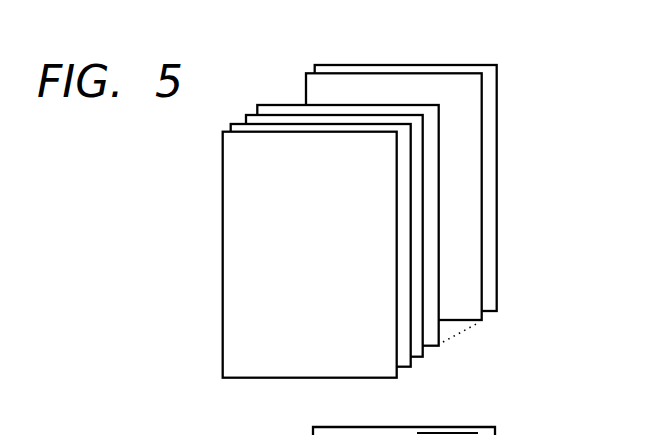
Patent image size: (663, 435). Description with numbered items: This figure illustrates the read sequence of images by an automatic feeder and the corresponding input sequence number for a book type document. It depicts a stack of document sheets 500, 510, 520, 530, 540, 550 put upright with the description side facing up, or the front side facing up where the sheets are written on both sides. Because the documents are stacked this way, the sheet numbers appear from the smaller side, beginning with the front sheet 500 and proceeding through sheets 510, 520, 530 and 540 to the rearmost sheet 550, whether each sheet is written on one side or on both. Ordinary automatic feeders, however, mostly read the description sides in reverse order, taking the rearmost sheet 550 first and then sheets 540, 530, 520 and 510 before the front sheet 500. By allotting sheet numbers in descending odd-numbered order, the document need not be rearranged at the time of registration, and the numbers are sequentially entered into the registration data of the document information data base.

The document sheet 500 is at (360, 367).
The document sheet 510 is at (415, 367).
The document sheet 520 is at (420, 357).
The document sheet 530 is at (432, 342).
The document sheet 540 is at (483, 313).
The document sheet 550 is at (495, 300).